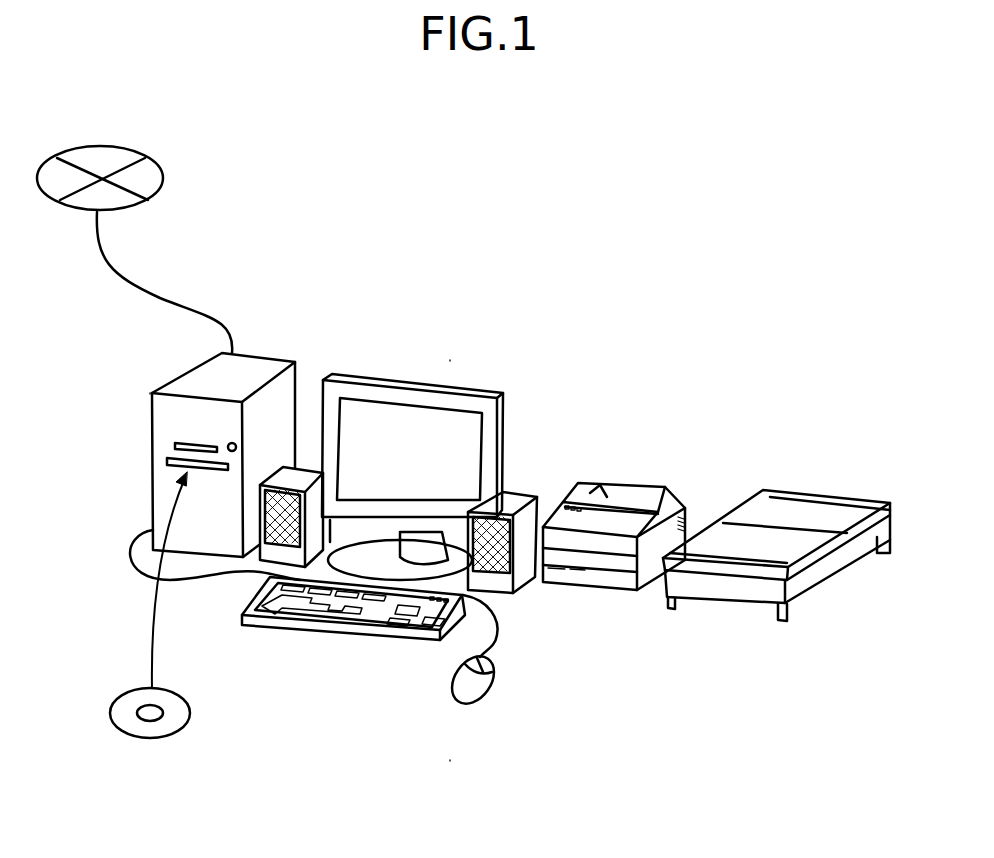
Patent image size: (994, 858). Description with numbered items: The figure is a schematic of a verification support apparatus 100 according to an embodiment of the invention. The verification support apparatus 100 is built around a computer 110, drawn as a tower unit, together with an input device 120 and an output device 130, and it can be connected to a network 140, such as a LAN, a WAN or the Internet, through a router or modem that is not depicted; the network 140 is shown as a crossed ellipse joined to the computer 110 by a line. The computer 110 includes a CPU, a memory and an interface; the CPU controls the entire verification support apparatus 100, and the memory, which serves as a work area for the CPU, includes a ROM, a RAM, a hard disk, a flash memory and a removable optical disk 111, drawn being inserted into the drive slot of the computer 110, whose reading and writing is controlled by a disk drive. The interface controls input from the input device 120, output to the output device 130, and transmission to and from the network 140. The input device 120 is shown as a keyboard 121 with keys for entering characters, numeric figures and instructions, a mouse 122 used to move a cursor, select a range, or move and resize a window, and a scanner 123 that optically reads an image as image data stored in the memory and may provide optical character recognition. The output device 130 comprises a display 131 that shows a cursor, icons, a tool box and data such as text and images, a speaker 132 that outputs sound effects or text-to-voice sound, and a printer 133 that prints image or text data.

The verification support apparatus 100 is at (722, 225).
The computer 110 is at (268, 356).
The optical disk 111 is at (177, 728).
The input device 120 is at (423, 760).
The keyboard 121 is at (403, 640).
The mouse 122 is at (490, 687).
The scanner 123 is at (693, 612).
The output device 130 is at (447, 355).
The display 131 is at (453, 385).
The speaker 132 is at (523, 492).
The printer 133 is at (627, 485).
The network 140 is at (160, 163).